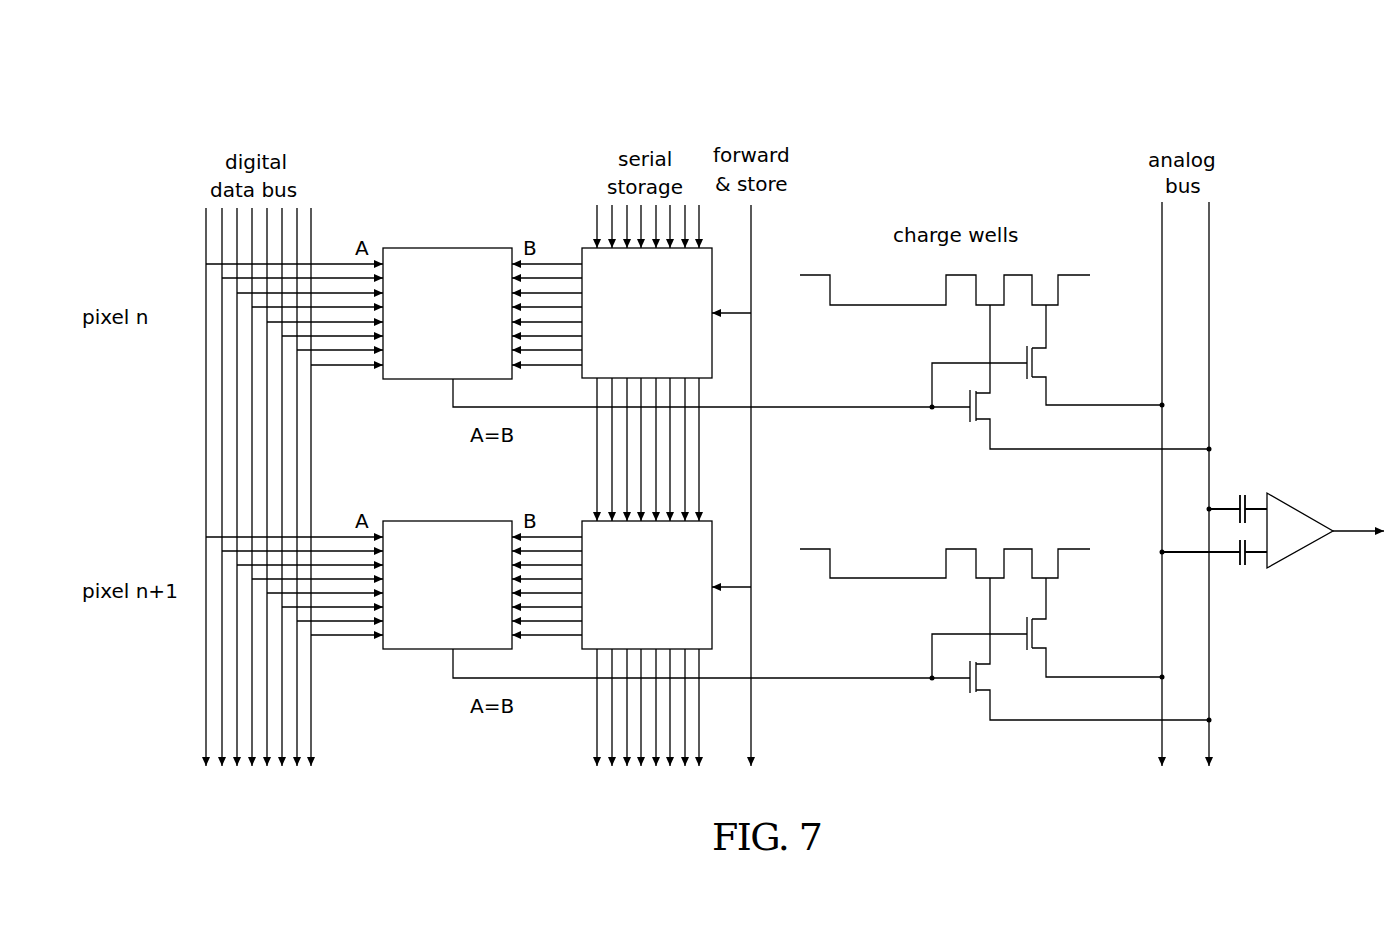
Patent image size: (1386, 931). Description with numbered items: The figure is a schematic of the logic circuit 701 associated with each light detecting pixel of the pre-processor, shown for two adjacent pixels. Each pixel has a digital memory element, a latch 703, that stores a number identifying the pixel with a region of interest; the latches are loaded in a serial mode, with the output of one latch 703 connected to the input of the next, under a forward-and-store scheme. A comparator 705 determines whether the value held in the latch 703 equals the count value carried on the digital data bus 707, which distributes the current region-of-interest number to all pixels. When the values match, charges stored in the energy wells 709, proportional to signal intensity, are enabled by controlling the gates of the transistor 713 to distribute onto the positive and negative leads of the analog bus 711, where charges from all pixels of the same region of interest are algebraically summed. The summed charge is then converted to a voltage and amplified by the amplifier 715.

The logic circuit 701 is at (748, 113).
The latch 703 is at (631, 485).
The comparator 705 is at (676, 463).
The digital data bus 707 is at (213, 293).
The energy wells 709 is at (964, 298).
The analog bus 711 is at (1192, 245).
The transistor 713 is at (963, 418).
The amplifier 715 is at (1292, 520).